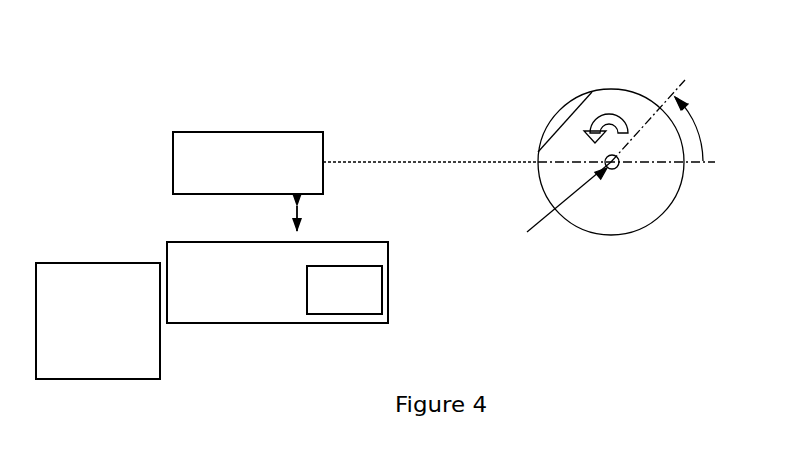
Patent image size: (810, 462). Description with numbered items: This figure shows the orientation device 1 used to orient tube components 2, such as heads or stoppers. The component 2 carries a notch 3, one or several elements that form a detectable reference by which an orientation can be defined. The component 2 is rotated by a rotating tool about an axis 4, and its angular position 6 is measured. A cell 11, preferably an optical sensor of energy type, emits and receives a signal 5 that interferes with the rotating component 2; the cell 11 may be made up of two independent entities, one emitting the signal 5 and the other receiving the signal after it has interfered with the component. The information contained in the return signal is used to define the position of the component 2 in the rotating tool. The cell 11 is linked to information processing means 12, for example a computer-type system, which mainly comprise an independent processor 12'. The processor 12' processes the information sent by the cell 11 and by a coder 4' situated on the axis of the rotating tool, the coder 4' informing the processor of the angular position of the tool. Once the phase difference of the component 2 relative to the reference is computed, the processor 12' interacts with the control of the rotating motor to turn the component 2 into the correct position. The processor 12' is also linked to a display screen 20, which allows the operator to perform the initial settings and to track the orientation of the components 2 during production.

The measuring apparatus 1 is at (382, 78).
The component 2 is at (642, 115).
The notch 3 is at (558, 125).
The axis 4 is at (626, 203).
The coder 4' is at (597, 166).
The signal 5 is at (435, 162).
The angular position 6 is at (701, 129).
The cell 11 is at (200, 147).
The information processing means 12 is at (277, 282).
The processor 12' is at (443, 292).
The display screen 20 is at (80, 301).